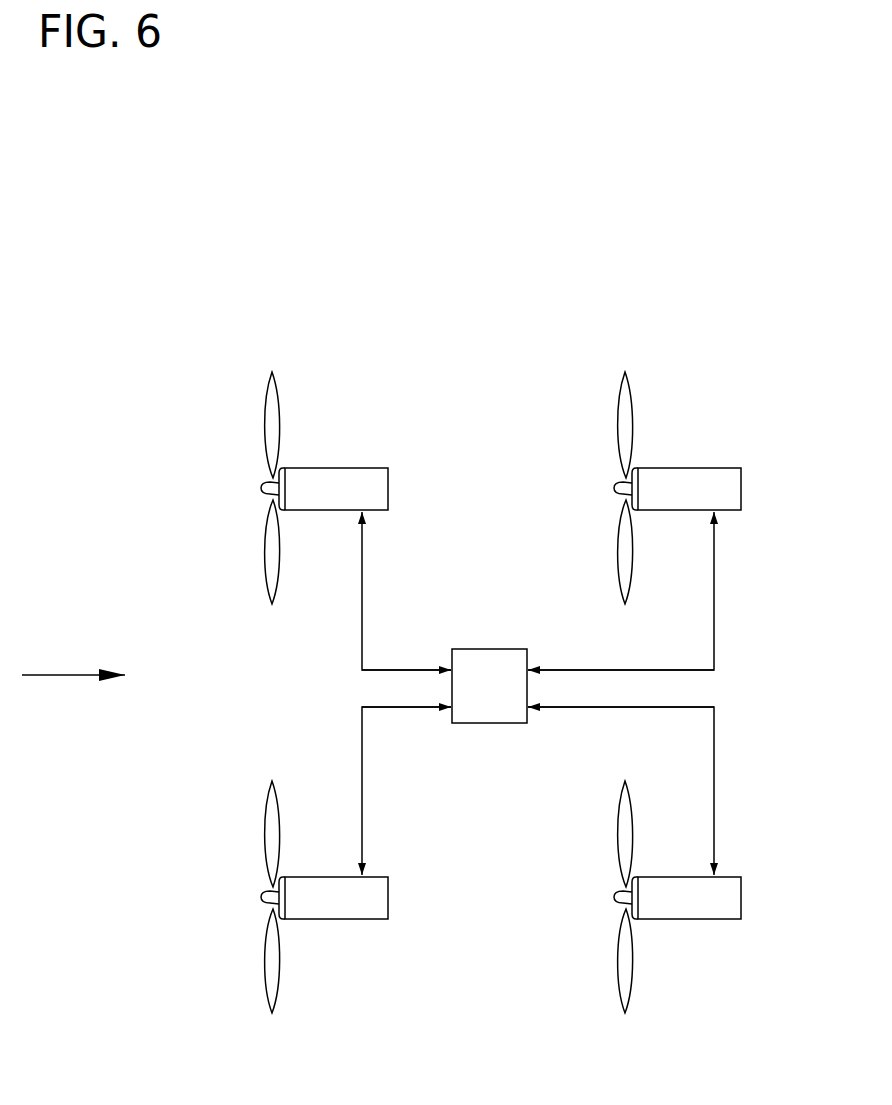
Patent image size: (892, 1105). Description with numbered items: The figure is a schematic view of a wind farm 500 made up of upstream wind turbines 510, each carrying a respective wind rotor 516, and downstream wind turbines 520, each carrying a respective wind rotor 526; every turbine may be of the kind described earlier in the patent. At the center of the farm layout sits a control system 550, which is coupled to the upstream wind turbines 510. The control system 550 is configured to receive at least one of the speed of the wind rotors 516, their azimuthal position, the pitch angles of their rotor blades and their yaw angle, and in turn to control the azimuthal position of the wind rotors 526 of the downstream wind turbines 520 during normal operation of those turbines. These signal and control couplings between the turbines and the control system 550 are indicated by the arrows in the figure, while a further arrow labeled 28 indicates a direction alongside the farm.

The wind farm 500 is at (192, 208).
The upstream wind turbine 510 is at (348, 380).
The wind rotor 516 is at (255, 410).
The downstream wind turbine 520 is at (715, 382).
The wind rotor 526 is at (606, 410).
The control system 550 is at (508, 695).
The flight direction 28 is at (60, 675).